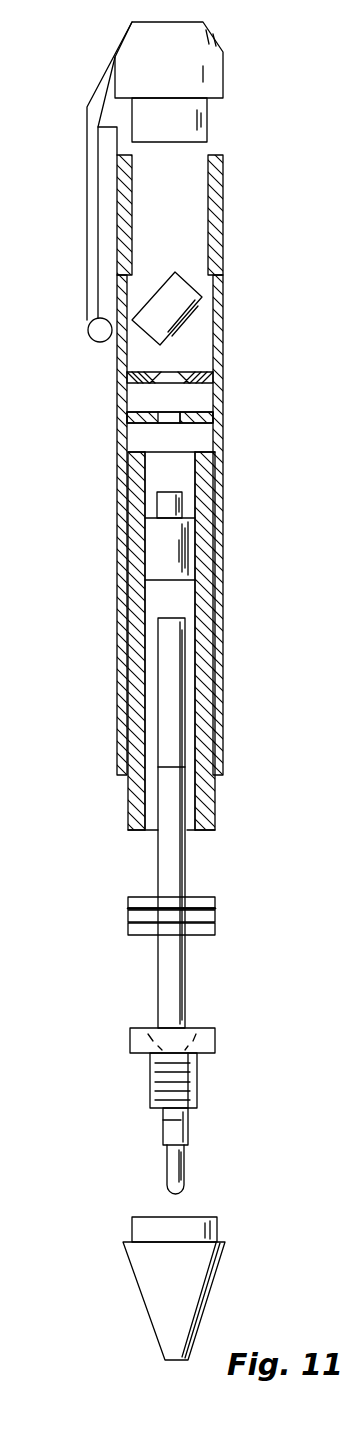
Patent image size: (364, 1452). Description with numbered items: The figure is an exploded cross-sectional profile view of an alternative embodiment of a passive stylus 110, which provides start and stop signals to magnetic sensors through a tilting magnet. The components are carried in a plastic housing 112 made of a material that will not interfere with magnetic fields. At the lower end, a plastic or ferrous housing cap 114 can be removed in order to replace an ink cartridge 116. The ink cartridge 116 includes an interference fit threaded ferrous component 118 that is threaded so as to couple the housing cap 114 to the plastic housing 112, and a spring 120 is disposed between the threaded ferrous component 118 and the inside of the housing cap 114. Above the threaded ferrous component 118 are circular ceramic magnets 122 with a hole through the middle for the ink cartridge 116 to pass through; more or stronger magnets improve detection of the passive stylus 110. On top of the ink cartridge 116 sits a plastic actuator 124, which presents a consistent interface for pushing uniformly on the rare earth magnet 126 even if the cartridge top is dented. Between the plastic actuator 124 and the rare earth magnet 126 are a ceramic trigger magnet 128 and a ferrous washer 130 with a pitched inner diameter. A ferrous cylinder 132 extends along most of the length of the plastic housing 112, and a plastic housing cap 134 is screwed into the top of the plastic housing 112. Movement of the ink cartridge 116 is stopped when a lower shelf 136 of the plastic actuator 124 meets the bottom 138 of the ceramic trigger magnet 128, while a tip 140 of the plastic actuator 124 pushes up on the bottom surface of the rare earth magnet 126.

The passive stylus 110 is at (243, 643).
The plastic housing 112 is at (177, 212).
The housing cap 114 is at (180, 1268).
The ink cartridge 116 is at (188, 992).
The interference fit threaded ferrous component 118 is at (217, 1043).
The spring 120 is at (198, 1086).
The circular ceramic magnets 122 is at (217, 915).
The plastic actuator 124 is at (167, 553).
The rare earth magnet 126 is at (172, 287).
The ceramic trigger magnet 128 is at (125, 421).
The ferrous washer 130 is at (124, 380).
The ferrous cylinder 132 is at (217, 801).
The plastic housing cap 134 is at (180, 122).
The lower shelf 136 is at (177, 530).
The bottom of the ceramic trigger magnet 138 is at (185, 427).
The tip of the plastic actuator 140 is at (167, 505).